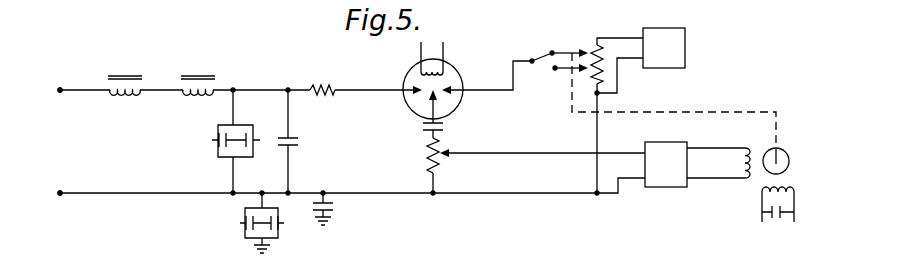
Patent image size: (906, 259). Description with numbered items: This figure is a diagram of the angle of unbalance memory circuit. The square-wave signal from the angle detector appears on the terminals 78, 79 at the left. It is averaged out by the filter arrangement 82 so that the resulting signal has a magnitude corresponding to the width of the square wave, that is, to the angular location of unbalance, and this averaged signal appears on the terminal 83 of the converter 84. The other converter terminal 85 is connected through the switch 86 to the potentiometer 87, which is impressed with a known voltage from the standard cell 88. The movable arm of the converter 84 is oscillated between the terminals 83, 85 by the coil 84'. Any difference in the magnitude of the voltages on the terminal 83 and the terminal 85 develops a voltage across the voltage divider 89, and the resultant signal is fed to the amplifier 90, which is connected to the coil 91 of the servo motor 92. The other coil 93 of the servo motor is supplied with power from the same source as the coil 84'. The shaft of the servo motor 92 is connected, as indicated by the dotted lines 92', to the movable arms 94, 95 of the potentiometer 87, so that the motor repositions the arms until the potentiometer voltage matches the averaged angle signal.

The terminal 78 is at (59, 92).
The terminal 79 is at (60, 191).
The filter arrangement 82 is at (224, 112).
The terminal 83 is at (373, 91).
The converter 84 is at (451, 72).
The coil 84' is at (403, 60).
The terminal 85 is at (483, 91).
The switch 86 is at (540, 55).
The potentiometer 87 is at (603, 48).
The standard cell 88 is at (677, 46).
The voltage divider 89 is at (428, 160).
The amplifier 90 is at (666, 164).
The coil 91 is at (741, 162).
The servo motor 92 is at (786, 149).
The dotted lines 92' is at (674, 100).
The coil 93 is at (796, 181).
The movable arm 94 is at (565, 52).
The movable arm 95 is at (557, 72).